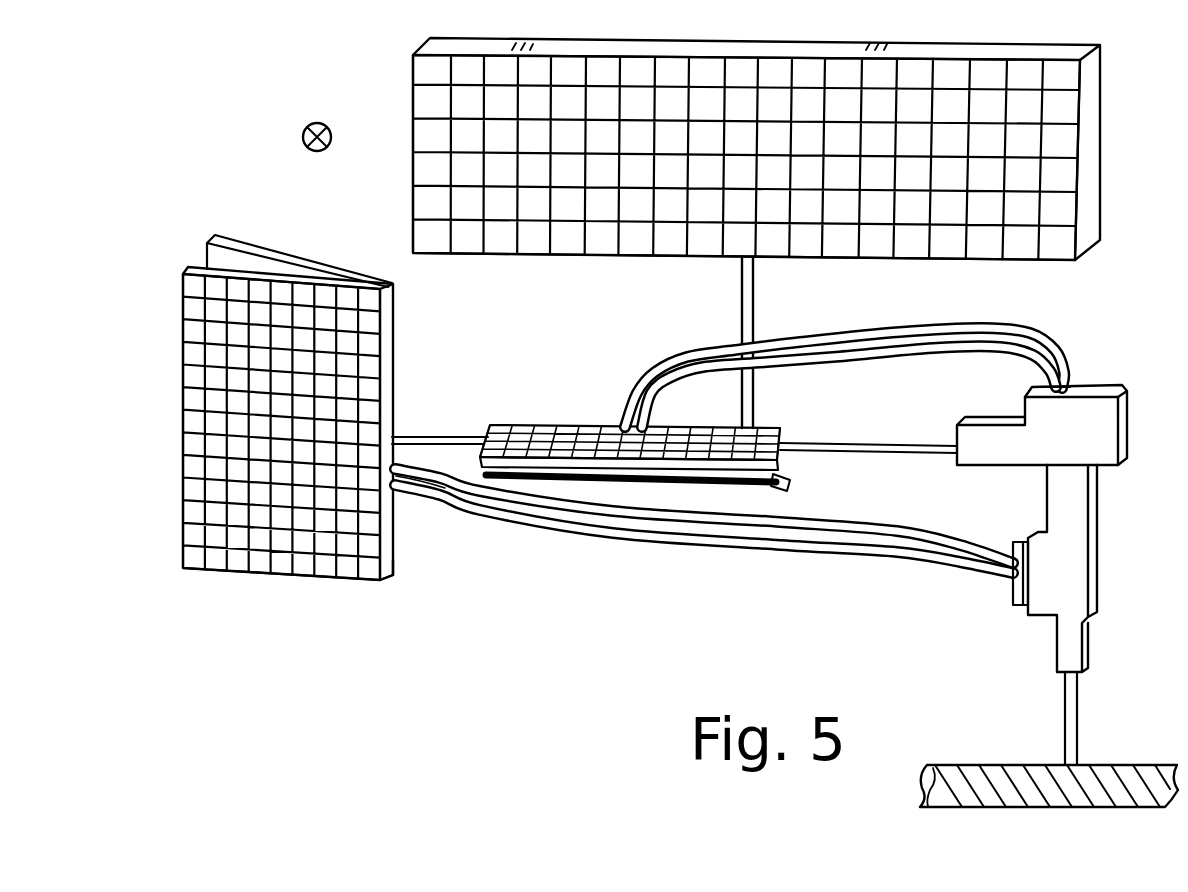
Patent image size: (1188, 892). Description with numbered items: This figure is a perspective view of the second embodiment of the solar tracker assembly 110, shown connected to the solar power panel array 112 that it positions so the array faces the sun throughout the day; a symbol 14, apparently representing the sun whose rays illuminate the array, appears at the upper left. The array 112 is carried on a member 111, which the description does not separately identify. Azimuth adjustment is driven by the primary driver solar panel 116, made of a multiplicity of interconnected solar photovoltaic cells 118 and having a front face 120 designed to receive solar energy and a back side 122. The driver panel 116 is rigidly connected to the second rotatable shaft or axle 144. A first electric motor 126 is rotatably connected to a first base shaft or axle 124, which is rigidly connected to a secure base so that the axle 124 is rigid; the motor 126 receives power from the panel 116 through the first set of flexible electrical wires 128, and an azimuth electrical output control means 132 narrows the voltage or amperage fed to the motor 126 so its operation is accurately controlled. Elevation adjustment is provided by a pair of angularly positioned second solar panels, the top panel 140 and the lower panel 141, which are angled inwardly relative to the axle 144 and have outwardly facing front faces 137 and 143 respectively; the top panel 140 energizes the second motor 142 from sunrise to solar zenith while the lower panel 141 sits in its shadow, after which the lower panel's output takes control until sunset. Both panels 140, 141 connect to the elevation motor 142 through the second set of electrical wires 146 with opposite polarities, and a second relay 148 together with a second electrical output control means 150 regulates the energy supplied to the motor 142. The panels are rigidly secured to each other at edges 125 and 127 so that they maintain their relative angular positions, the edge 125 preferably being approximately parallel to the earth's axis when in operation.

The light source 14 is at (313, 153).
The solar tracker assembly 110 is at (1129, 280).
The support post 111 is at (756, 301).
The solar power panel array 112 is at (1152, 101).
The azimuth adjustment primary driver solar panel 116 is at (324, 422).
The solar photovoltaic cells 118 is at (380, 349).
The front side or face 120 is at (360, 390).
The back side 122 is at (245, 269).
The first base shaft or axle 124 is at (1079, 718).
The edge 125 is at (385, 573).
The first electric motor 126 is at (1030, 568).
The edges 127 is at (783, 470).
The first set of electrical wires 128 is at (906, 512).
The azimuth electrical output control means 132 is at (1011, 571).
The front side or face 137 is at (673, 435).
The top elevation adjustment solar panel 140 is at (478, 432).
The lower elevation adjustment solar panel 141 is at (792, 496).
The second motor 142 is at (1026, 396).
The front side or face 143 is at (474, 479).
The second rotatable shaft or axle 144 is at (835, 442).
The second set of electrical wires 146 is at (897, 336).
The second relay 148 is at (1103, 385).
The second electrical output control means 150 is at (1053, 383).